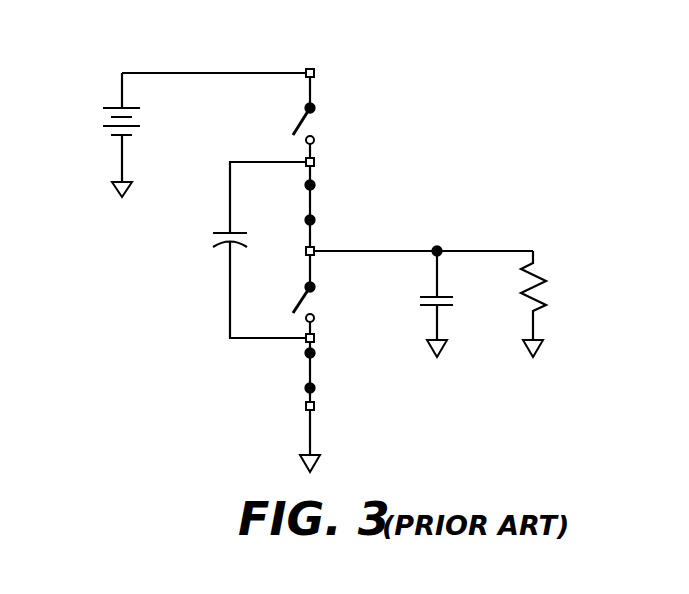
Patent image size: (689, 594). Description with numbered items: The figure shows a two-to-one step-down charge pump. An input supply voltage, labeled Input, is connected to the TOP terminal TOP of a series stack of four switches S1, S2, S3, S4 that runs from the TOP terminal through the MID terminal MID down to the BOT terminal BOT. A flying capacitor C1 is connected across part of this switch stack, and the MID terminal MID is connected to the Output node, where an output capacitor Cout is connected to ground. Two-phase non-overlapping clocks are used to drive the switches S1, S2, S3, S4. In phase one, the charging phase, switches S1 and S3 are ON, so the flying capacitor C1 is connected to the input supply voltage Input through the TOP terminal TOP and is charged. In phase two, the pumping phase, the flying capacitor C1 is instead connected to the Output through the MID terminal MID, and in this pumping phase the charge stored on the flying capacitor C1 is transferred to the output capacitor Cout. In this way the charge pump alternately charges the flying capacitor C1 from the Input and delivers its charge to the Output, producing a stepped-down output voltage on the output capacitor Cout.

The input supply voltage Input is at (204, 120).
The TOP terminal TOP is at (308, 60).
The switch S1 is at (326, 121).
The switch S2 is at (332, 206).
The MID terminal MID is at (419, 239).
The switch S3 is at (326, 298).
The switch S4 is at (332, 372).
The BOT terminal BOT is at (333, 434).
The flying capacitor C1 is at (242, 250).
The output capacitor Cout is at (461, 304).
The output Output is at (531, 291).